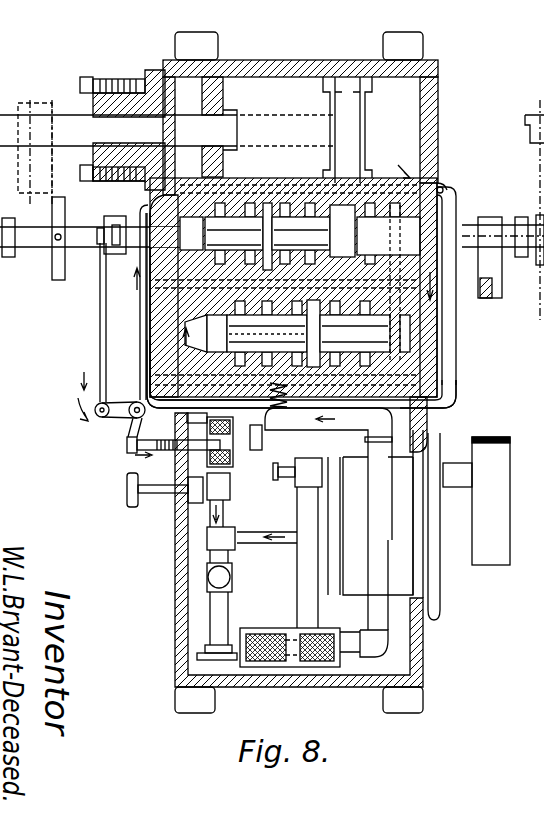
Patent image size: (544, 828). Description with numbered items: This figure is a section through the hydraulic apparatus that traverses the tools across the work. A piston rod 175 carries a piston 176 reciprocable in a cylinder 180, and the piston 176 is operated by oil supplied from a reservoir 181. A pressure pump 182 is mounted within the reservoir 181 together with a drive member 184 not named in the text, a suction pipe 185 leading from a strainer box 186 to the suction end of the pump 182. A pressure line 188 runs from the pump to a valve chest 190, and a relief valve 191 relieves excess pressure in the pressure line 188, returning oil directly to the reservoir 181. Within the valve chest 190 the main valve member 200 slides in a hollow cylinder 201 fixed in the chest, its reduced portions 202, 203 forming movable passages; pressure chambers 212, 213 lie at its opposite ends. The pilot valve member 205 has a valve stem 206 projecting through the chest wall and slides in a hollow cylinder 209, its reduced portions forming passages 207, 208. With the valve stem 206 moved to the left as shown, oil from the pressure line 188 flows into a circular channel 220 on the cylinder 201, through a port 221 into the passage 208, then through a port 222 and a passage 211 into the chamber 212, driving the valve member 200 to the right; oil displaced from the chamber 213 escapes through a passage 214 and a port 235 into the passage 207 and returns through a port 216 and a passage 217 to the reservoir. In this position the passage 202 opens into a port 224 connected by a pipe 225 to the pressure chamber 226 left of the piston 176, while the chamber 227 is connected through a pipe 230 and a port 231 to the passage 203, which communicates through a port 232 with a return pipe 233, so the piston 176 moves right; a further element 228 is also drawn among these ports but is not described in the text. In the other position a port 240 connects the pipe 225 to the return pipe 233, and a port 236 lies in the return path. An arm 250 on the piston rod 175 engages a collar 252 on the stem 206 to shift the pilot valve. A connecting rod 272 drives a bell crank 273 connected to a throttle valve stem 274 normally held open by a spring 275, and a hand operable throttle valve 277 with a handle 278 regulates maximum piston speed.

The piston rod 175 is at (525, 125).
The piston 176 is at (226, 92).
The cylinder 180 is at (313, 60).
The reservoir 181 is at (175, 588).
The pressure pump 182 is at (397, 573).
The motor 184 is at (500, 492).
The suction pipe 185 is at (385, 613).
The strainer box 186 is at (335, 663).
The pressure line 188 is at (336, 430).
The valve chest 190 is at (437, 328).
The relief valve 191 is at (305, 480).
The valve member 200 is at (437, 356).
The hollow cylinder 201 is at (158, 355).
The reduced portion 202 is at (160, 388).
The reduced portion 203 is at (437, 406).
The pilot valve member 205 is at (350, 242).
The valve stem 206 is at (83, 240).
The passage 207 is at (260, 200).
The passage 208 is at (300, 200).
The hollow cylinder 209 is at (438, 186).
The passage 211 is at (129, 306).
The pressure chamber 212 is at (165, 332).
The pressure chamber 213 is at (425, 387).
The passage 214 is at (470, 278).
The port 216 is at (192, 233).
The passage 217 is at (372, 181).
The circular channel 220 is at (268, 366).
The port 221 is at (301, 233).
The port 222 is at (330, 231).
The port 224 is at (237, 366).
The pipe 225 is at (150, 299).
The pressure chamber 226 is at (165, 80).
The chamber 227 is at (405, 98).
The piston 228 is at (297, 366).
The pipe 230 is at (456, 318).
The port 231 is at (330, 366).
The port 232 is at (364, 366).
The return pipe 233 is at (280, 410).
The port 235 is at (218, 242).
The port 236 is at (357, 181).
The port 240 is at (200, 335).
The arm 250 is at (540, 183).
The collar 252 is at (56, 268).
The connecting rod 272 is at (100, 349).
The bell crank 273 is at (120, 426).
The throttle valve stem 274 is at (158, 454).
The spring 275 is at (235, 465).
The hand operable throttle valve 277 is at (180, 534).
The handle 278 is at (128, 498).